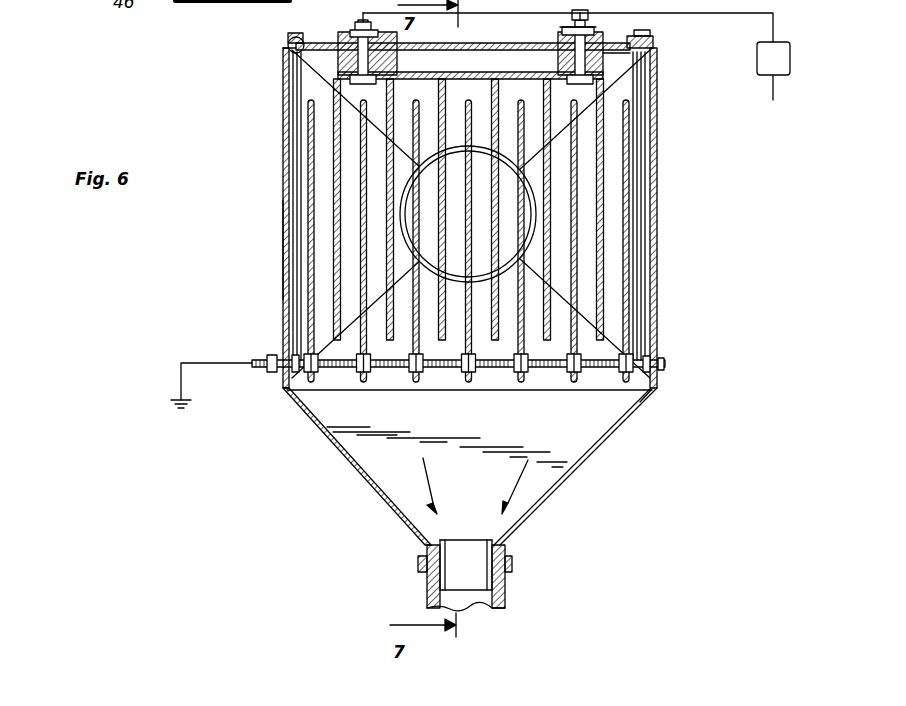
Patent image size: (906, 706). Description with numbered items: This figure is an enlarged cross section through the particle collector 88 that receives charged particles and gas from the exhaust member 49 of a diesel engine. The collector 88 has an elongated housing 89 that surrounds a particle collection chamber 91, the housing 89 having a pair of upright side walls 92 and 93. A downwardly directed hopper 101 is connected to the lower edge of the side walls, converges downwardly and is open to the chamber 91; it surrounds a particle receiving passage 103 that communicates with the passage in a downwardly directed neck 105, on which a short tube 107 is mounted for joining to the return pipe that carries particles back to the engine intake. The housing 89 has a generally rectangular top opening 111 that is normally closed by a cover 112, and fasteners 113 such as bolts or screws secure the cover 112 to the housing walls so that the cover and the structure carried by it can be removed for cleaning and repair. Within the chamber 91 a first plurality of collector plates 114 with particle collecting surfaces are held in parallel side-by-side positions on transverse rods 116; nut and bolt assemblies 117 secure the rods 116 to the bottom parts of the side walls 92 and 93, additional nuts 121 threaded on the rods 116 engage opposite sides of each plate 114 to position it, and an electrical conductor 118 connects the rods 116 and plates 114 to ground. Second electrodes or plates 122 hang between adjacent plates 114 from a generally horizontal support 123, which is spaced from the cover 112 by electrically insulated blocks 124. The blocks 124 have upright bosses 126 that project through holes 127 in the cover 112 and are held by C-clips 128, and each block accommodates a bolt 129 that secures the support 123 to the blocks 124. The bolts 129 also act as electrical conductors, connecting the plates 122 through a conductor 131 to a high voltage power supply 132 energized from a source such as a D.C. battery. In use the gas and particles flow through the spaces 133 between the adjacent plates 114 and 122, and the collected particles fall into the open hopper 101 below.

The exhaust member 49 is at (483, 146).
The particle collector 88 is at (255, 205).
The housing 89 is at (662, 304).
The particle collection chamber 91 is at (301, 92).
The side wall 92 is at (283, 290).
The side wall 93 is at (657, 215).
The hopper 101 is at (370, 487).
The particle receiving passage 103 is at (490, 491).
The neck 105 is at (460, 545).
The short tube 107 is at (505, 598).
The top opening 111 is at (290, 68).
The cover 112 is at (305, 22).
The fasteners 113 is at (653, 38).
The collector plates 114 is at (308, 322).
The transverse rods 116 is at (588, 374).
The nut and bolt assemblies 117 is at (268, 378).
The electrical conductor 118 is at (181, 385).
The nuts 121 is at (467, 376).
The second electrodes 122 is at (604, 185).
The support 123 is at (470, 70).
The electrically insulated blocks 124 is at (397, 64).
The bosses 126 is at (586, 24).
The holes 127 is at (536, 50).
The C-clips 128 is at (597, 43).
The bolt 129 is at (362, 22).
The conductor 131 is at (775, 30).
The high voltage power supply 132 is at (791, 60).
The spaces 133 is at (345, 253).